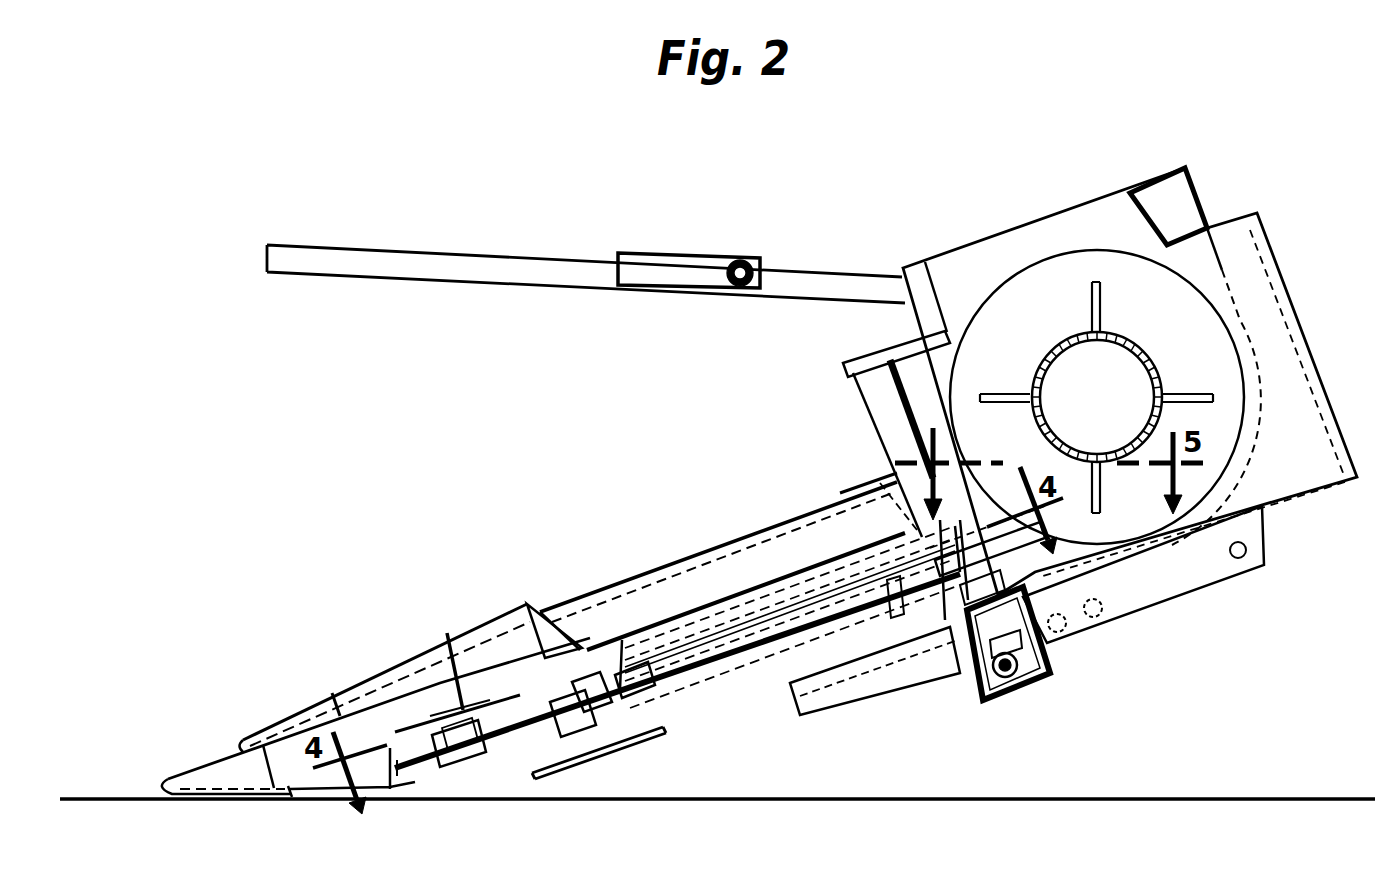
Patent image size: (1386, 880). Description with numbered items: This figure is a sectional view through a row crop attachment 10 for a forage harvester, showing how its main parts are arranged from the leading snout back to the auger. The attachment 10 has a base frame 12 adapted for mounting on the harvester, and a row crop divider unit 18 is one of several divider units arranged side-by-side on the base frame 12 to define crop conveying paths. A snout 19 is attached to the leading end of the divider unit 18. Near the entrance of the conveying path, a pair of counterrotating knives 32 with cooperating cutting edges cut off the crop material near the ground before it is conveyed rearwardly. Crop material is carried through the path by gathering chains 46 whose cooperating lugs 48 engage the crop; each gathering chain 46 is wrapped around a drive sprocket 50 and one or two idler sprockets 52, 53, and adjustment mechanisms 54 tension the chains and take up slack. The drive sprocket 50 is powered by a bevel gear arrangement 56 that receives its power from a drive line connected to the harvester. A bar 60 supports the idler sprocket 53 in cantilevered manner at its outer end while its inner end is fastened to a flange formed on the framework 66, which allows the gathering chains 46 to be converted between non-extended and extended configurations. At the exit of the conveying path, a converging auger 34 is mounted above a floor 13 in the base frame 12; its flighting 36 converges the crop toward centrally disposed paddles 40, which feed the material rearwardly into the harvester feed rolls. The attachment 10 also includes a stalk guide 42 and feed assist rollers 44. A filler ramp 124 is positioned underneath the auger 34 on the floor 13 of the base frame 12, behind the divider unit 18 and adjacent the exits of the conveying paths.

The row crop attachment 10 is at (552, 148).
The base frame 12 is at (1200, 192).
The floor 13 is at (1180, 550).
The row crop divider unit 18 is at (603, 595).
The snout 19 is at (215, 770).
The counterrotating knives 32 is at (573, 762).
The converging auger 34 is at (1047, 347).
The flighting 36 is at (1047, 283).
The paddles 40 is at (1193, 390).
The stalk guide 42 is at (432, 250).
The feed assist rollers 44 is at (866, 357).
The gathering chains 46 is at (520, 700).
The lugs 48 is at (408, 772).
The drive sprocket 50 is at (890, 540).
The idler sprocket 52 is at (532, 600).
The idler sprocket 53 is at (447, 633).
The adjustment mechanisms 54 is at (718, 633).
The bevel gear arrangement 56 is at (1017, 690).
The bar 60 is at (505, 745).
The framework 66 is at (633, 710).
The filler ramp 124 is at (1120, 563).